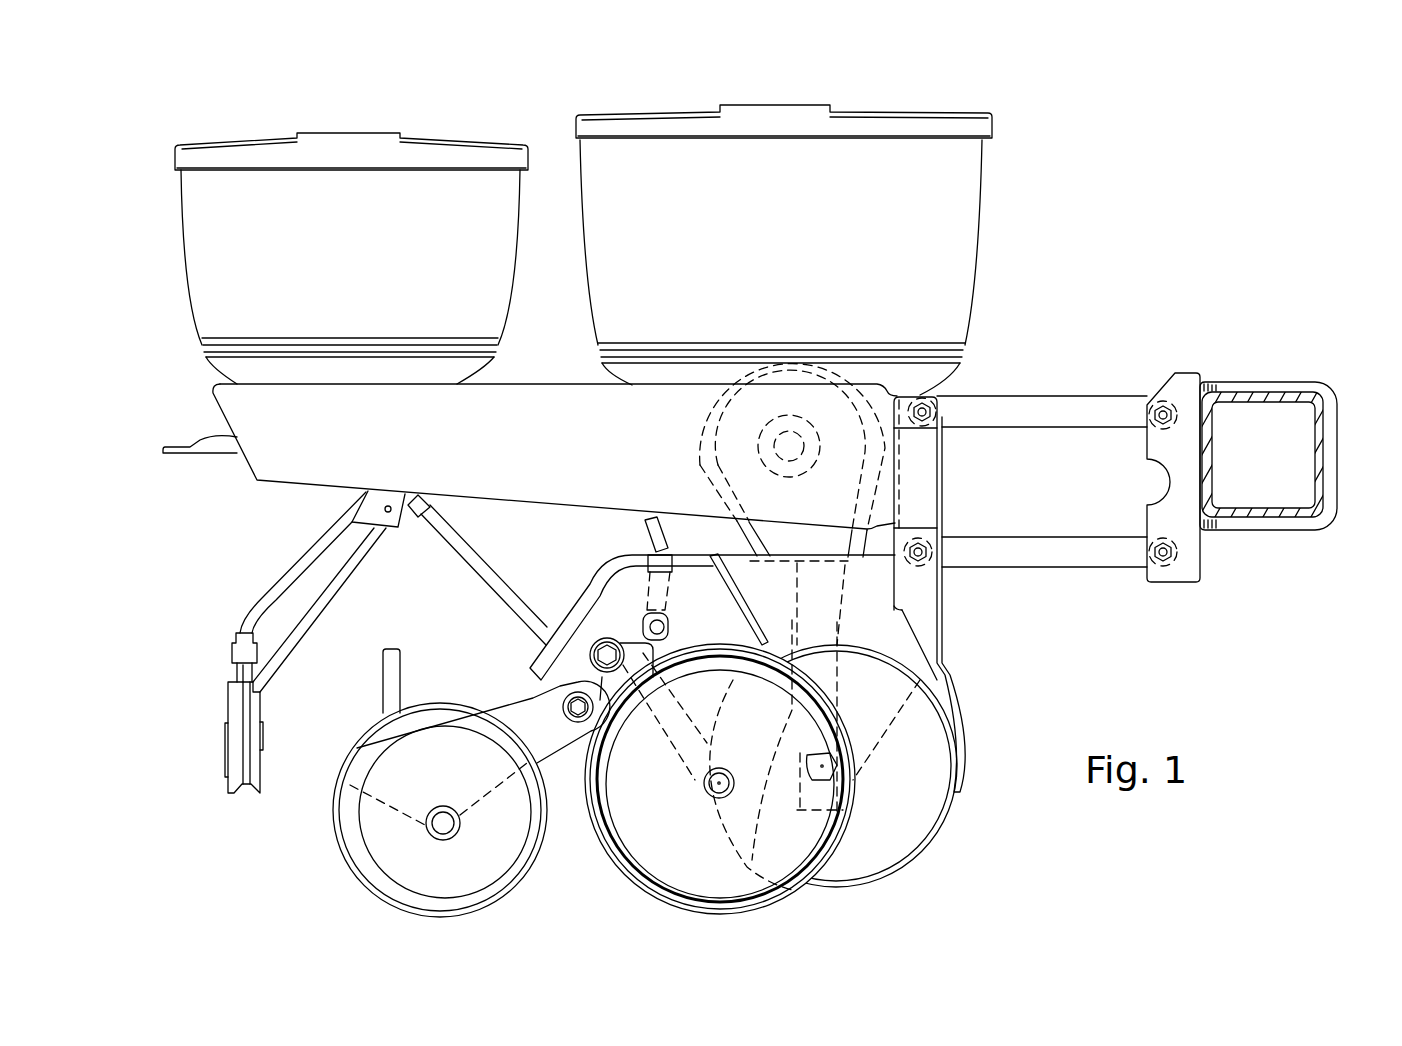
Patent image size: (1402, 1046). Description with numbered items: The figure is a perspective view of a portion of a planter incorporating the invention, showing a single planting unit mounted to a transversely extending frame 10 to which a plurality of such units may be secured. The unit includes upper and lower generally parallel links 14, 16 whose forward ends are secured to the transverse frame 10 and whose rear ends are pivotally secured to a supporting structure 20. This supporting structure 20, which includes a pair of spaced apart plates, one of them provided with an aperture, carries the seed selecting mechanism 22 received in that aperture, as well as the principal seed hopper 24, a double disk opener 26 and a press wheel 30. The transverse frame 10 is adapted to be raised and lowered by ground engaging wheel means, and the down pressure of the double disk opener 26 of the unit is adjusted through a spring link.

The transversely extending frame 10 is at (1267, 520).
The upper link 14 is at (1067, 412).
The lower link 16 is at (1073, 557).
The supporting structure 20 is at (930, 465).
The seed selecting mechanism 22 is at (727, 455).
The principal seed hopper 24 is at (783, 271).
The double disk opener 26 is at (910, 812).
The press wheel 30 is at (373, 845).